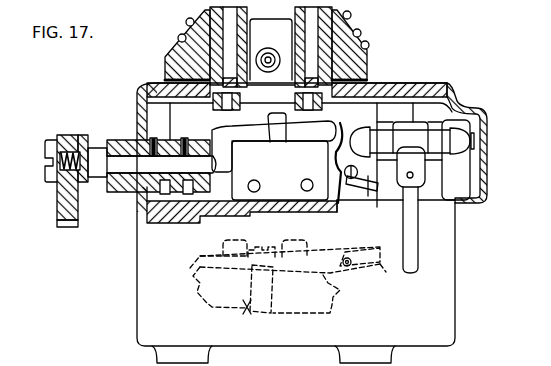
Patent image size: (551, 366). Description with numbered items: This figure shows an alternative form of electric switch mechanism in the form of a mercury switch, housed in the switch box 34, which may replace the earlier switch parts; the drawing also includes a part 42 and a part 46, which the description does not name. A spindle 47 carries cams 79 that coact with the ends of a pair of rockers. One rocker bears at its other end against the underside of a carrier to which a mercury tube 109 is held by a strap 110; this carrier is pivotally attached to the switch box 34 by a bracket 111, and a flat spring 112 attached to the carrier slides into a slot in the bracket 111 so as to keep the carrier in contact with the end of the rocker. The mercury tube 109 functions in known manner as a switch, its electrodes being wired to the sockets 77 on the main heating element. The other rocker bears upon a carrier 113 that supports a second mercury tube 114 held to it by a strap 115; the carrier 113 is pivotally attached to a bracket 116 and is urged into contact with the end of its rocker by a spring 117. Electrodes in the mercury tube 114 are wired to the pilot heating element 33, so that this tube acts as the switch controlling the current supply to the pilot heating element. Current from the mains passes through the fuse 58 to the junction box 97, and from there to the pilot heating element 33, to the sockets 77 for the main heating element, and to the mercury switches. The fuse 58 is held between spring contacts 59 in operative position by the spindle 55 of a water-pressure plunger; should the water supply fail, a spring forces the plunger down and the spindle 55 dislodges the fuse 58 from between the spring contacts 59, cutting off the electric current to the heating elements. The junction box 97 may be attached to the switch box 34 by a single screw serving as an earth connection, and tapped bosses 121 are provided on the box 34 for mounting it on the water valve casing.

The pilot heating element 33 is at (361, 35).
The switch box 34 is at (472, 113).
The cylinder head block 42 is at (165, 67).
The adjusting screw 46 is at (62, 207).
The spindle 47 is at (127, 166).
The spindle 55 is at (414, 245).
The fuse 58 is at (466, 157).
The spring contacts 59 is at (343, 123).
The sockets 77 is at (230, 48).
The cams 79 is at (190, 196).
The junction box 97 is at (300, 192).
The mercury tube 109 is at (224, 130).
The strap 110 is at (274, 114).
The bracket 111 is at (369, 196).
The flat spring 112 is at (349, 185).
The carrier 113 is at (204, 263).
The mercury tube 114 is at (333, 313).
The strap 115 is at (247, 310).
The bracket 116 is at (386, 272).
The spring 117 is at (350, 256).
The tapped bosses 121 is at (165, 355).